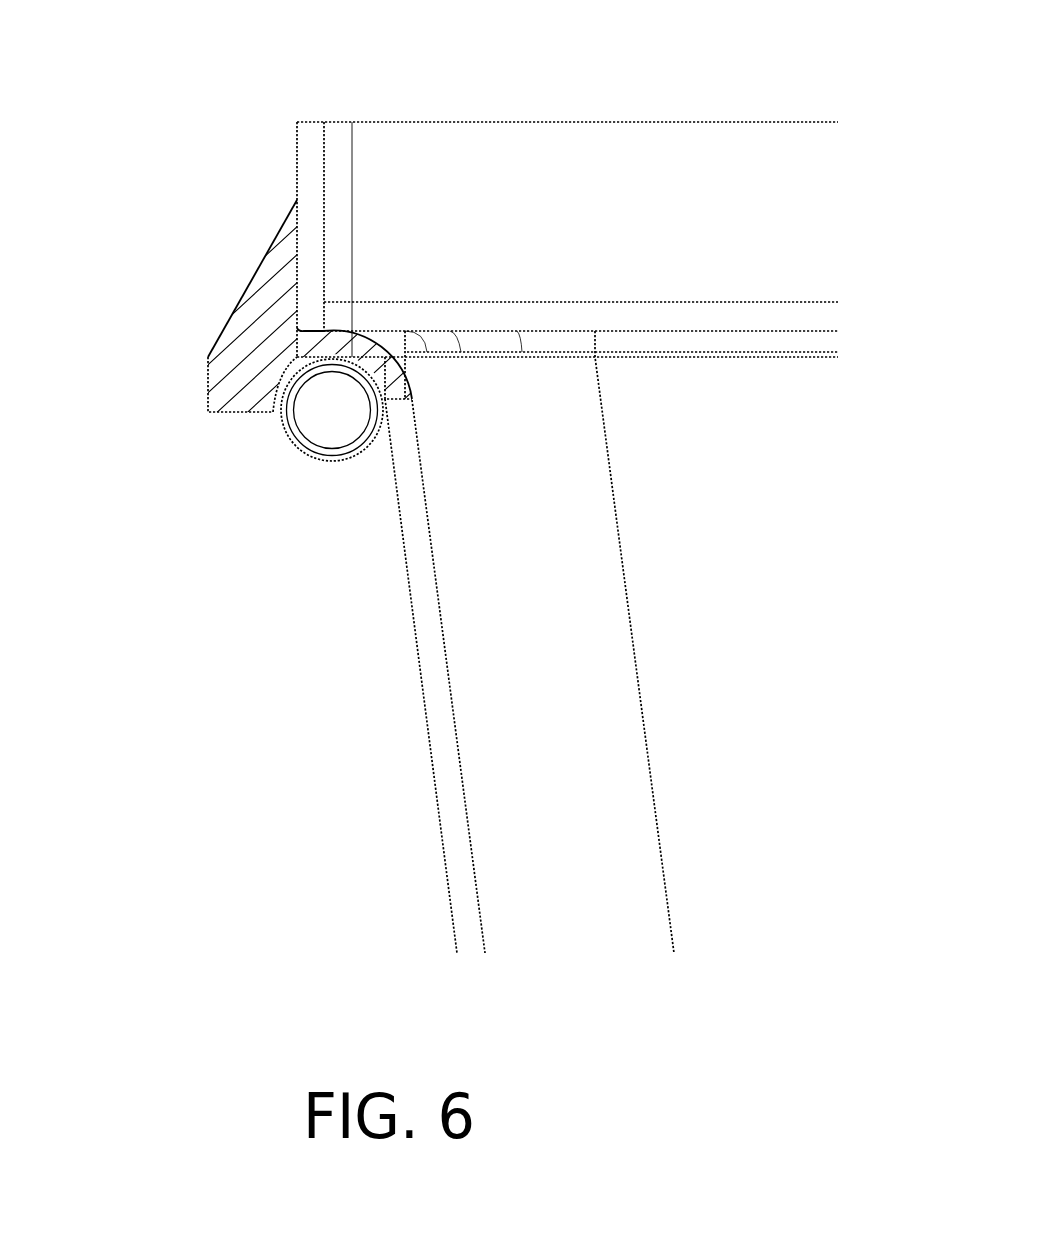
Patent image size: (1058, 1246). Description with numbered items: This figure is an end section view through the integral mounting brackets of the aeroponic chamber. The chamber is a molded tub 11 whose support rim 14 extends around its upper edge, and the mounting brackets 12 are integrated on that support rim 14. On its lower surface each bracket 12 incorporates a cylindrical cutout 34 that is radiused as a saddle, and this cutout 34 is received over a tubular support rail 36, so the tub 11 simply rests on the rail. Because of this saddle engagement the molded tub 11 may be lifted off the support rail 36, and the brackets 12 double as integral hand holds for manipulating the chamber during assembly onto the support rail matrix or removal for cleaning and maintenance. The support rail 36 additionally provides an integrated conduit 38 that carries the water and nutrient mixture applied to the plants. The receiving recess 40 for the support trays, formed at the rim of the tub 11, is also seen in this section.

The molded tub 11 is at (463, 863).
The mounting bracket 12 is at (243, 345).
The support rim 14 is at (310, 153).
The cylindrical cutout 34 is at (370, 450).
The tubular support rail 36 is at (302, 452).
The integrated conduit 38 is at (327, 427).
The receiving recess 40 is at (340, 303).